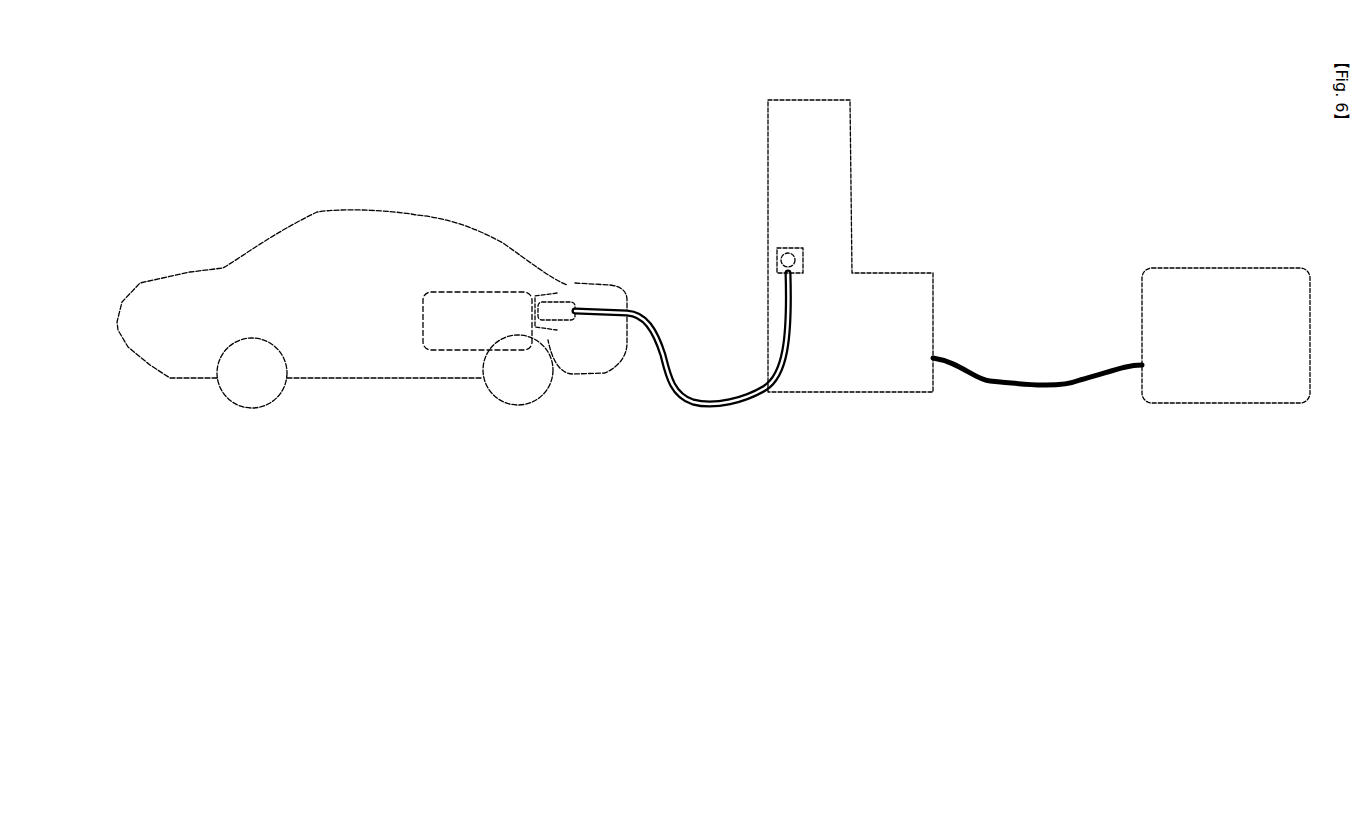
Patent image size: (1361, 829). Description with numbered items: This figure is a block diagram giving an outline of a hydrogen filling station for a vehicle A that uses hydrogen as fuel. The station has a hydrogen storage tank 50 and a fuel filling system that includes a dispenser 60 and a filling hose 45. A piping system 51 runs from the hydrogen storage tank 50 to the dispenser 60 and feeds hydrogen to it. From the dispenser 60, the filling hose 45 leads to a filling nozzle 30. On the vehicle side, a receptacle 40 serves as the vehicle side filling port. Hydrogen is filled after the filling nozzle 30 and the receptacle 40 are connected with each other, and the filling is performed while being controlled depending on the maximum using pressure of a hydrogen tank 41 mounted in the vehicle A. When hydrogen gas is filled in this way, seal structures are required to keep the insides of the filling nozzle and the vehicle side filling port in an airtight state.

The vehicle A is at (358, 203).
The hydrogen tank 41 is at (480, 290).
The filling nozzle 30 is at (560, 300).
The receptacle 40 is at (582, 376).
The filling hose 45 is at (690, 392).
The dispenser 60 is at (883, 272).
The piping system 51 is at (1015, 377).
The hydrogen storage tank 50 is at (1200, 265).